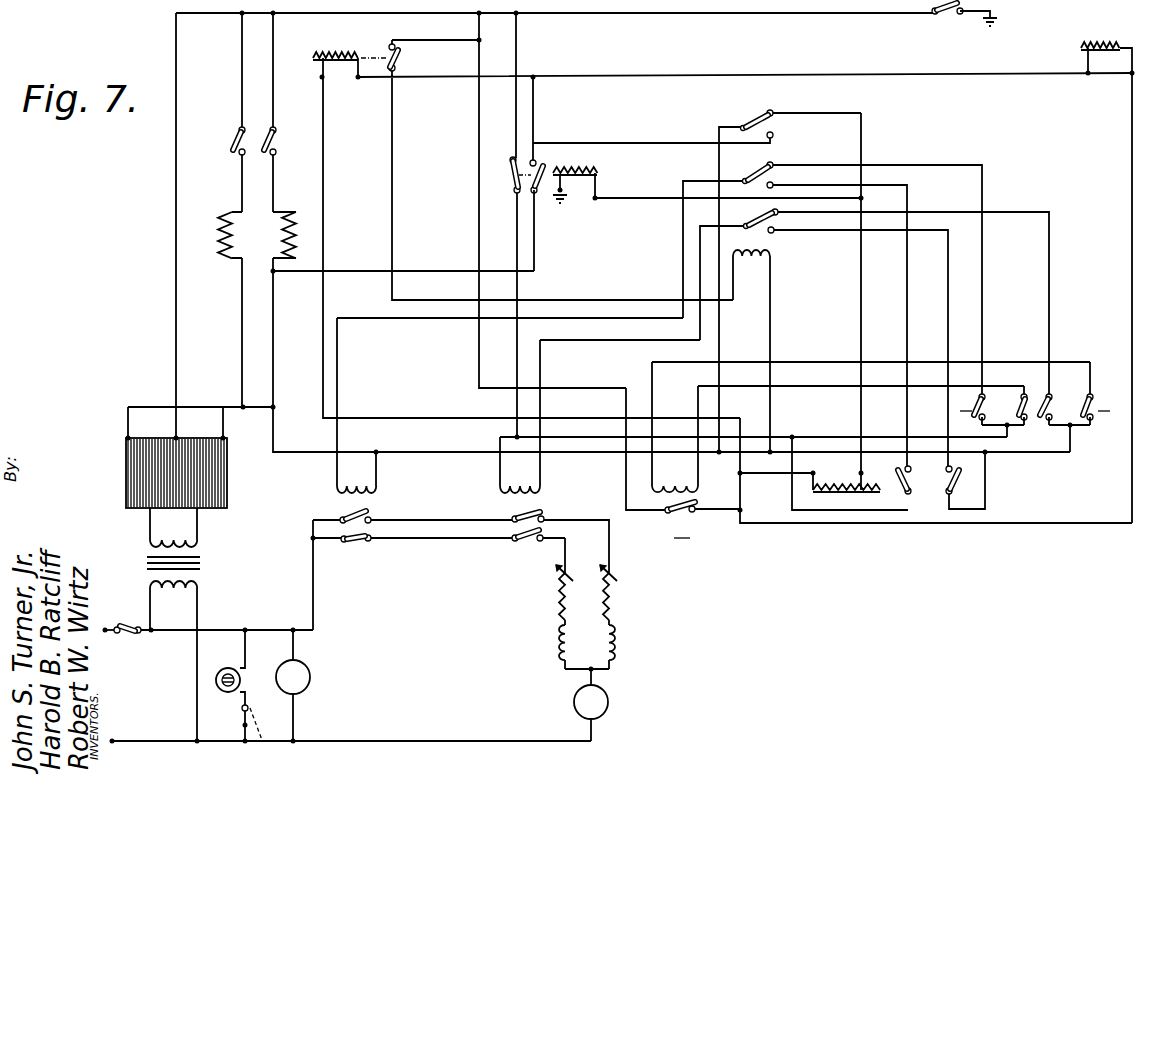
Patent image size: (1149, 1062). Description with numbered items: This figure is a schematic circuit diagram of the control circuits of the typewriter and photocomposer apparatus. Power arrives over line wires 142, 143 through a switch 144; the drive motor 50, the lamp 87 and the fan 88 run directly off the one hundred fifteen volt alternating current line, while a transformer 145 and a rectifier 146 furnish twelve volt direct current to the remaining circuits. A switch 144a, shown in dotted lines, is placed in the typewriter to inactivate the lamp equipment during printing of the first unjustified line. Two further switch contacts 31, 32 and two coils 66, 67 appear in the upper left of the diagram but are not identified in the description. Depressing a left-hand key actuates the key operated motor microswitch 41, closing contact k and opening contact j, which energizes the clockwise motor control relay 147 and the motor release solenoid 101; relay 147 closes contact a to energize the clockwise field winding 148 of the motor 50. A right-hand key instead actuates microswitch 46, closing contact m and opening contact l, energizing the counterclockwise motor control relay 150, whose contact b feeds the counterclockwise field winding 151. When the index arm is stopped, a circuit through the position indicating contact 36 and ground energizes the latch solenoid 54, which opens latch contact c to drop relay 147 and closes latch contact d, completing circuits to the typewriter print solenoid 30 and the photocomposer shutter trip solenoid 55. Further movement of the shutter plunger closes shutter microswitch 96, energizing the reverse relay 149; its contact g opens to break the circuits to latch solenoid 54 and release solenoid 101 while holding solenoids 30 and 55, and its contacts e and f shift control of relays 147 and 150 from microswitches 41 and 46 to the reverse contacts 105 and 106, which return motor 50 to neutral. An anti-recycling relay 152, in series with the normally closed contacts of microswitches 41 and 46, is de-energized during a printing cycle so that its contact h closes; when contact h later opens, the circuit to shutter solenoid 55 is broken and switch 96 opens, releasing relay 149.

The typewriter print solenoid 30 is at (1100, 45).
The switch 31 is at (279, 143).
The switch 32 is at (235, 135).
The position indicating contact 36 is at (945, 15).
The key operated motor microswitch 41 is at (1040, 450).
The microswitch 46 is at (1106, 450).
The drive motor 50 is at (608, 700).
The latch solenoid 54 is at (578, 195).
The photocomposer shutter trip solenoid 55 is at (348, 52).
The coil 66 is at (220, 218).
The coil 67 is at (297, 218).
The lamp 87 is at (226, 692).
The fan 88 is at (305, 688).
The shutter microswitch 96 is at (400, 58).
The motor release solenoid 101 is at (846, 472).
The reverse contact 105 is at (912, 480).
The reverse contact 106 is at (962, 480).
The line wire 142 is at (115, 745).
The line wire 143 is at (140, 613).
The switch 144 is at (175, 665).
The switch 144a is at (308, 771).
The transformer 145 is at (200, 563).
The rectifier 146 is at (228, 480).
The clockwise motor control relay 147 is at (376, 488).
The clockwise field winding 148 is at (620, 648).
The reverse relay 149 is at (772, 250).
The counterclockwise motor control relay 150 is at (540, 482).
The counterclockwise field winding 151 is at (560, 650).
The anti-recycling relay 152 is at (676, 427).
The contact a is at (355, 530).
The contact b is at (528, 528).
The latch contact c is at (511, 175).
The latch contact d is at (544, 209).
The contact e is at (760, 215).
The contact f is at (757, 169).
The contact g is at (757, 117).
The contact h is at (680, 520).
The contact j is at (1014, 407).
The contact k is at (972, 405).
The contact l is at (1096, 405).
The contact m is at (1056, 407).